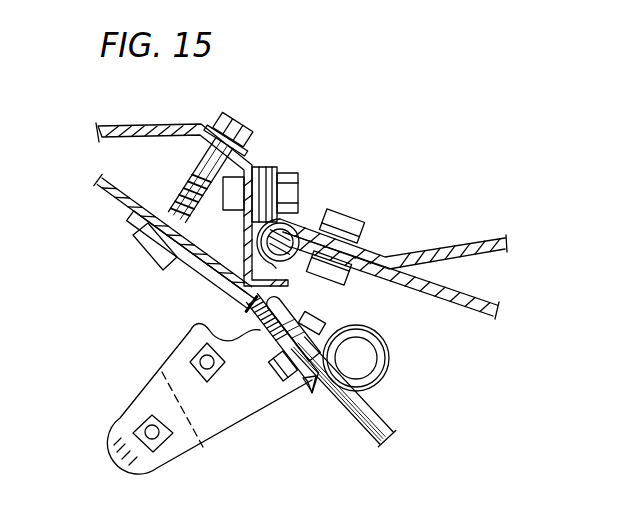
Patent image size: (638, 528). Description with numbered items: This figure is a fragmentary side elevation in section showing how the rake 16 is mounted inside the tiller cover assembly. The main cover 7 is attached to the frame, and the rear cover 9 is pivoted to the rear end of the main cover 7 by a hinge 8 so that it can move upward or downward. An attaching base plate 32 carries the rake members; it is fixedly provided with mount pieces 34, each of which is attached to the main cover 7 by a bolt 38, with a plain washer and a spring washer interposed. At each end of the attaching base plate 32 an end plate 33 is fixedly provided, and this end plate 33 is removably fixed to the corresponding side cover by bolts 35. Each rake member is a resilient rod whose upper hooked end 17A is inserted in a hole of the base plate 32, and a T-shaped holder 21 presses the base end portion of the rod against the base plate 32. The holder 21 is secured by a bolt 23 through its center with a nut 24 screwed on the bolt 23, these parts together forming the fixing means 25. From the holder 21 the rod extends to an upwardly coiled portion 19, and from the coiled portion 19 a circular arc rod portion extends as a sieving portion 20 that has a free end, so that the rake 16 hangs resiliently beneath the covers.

The main cover 7 is at (155, 126).
The bolt 38 is at (242, 127).
The hinge 8 is at (307, 214).
The rear cover 9 is at (477, 296).
The mount piece 34 is at (137, 224).
The holder 21 is at (250, 313).
The hooked end 17A is at (263, 327).
The bolt 23 is at (325, 323).
The nut 24 is at (277, 387).
The rake 16 is at (376, 399).
The sieving portion 20 is at (380, 427).
The coiled portion 19 is at (380, 340).
The attaching base plate 32 is at (311, 382).
The fixing means 25 is at (309, 404).
The end plate 33 is at (197, 447).
The bolt 35 is at (151, 425).